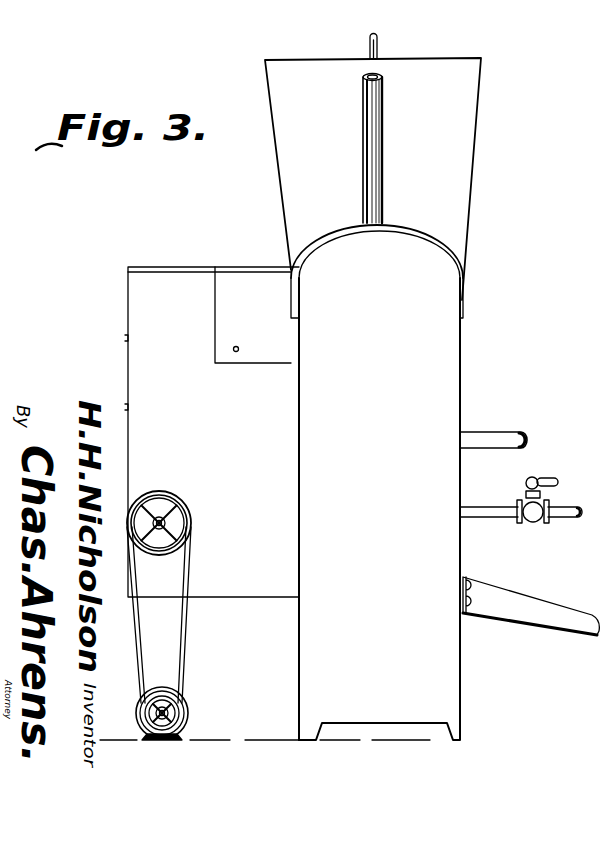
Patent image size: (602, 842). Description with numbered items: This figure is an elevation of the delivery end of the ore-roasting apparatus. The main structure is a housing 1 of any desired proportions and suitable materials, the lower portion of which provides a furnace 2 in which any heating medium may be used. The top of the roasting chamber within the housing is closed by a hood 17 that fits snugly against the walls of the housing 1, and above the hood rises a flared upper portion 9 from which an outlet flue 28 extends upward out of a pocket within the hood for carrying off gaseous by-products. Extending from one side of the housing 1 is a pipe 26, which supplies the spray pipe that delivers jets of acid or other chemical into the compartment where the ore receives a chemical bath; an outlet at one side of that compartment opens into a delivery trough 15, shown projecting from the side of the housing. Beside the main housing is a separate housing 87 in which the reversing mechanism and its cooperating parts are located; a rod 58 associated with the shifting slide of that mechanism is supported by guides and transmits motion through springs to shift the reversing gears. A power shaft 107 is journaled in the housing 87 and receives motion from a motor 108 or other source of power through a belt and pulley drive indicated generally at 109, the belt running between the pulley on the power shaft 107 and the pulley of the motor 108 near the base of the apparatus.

The housing 1 is at (452, 673).
The furnace 2 is at (445, 555).
The hopper 9 is at (457, 162).
The delivery trough 15 is at (536, 607).
The hood 17 is at (438, 255).
The pipe 26 is at (502, 437).
The outlet flue 28 is at (377, 147).
The rod 58 is at (238, 352).
The housing 87 is at (147, 308).
The power shaft 107 is at (166, 522).
The motor 108 is at (188, 710).
The belt and pulley drive 109 is at (188, 630).